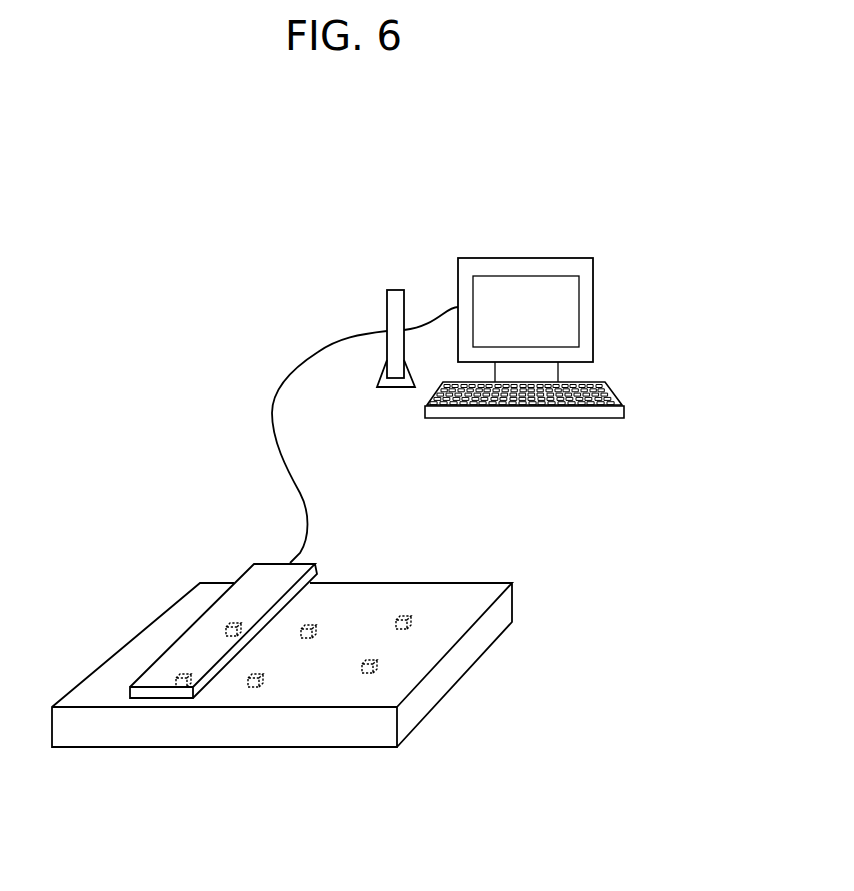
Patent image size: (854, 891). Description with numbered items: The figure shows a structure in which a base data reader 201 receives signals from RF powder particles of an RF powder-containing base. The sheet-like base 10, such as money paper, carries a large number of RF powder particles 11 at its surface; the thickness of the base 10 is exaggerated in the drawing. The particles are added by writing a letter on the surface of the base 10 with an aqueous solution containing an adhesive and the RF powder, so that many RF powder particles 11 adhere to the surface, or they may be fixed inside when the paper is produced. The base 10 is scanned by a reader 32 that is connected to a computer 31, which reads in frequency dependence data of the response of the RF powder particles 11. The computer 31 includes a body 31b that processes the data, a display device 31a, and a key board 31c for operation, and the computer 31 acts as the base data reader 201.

The base data reader 201 is at (598, 253).
The computer 31 is at (482, 245).
The display device 31a is at (593, 307).
The body 31b is at (387, 305).
The key board 31c is at (612, 389).
The reader 32 is at (255, 566).
The base 10 is at (448, 692).
The RF powder particles 11 is at (231, 620).